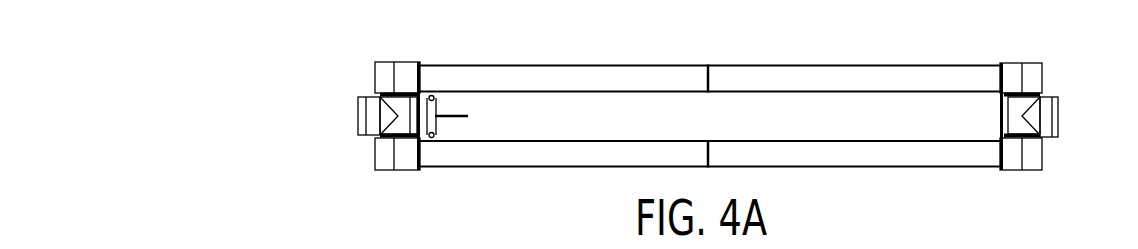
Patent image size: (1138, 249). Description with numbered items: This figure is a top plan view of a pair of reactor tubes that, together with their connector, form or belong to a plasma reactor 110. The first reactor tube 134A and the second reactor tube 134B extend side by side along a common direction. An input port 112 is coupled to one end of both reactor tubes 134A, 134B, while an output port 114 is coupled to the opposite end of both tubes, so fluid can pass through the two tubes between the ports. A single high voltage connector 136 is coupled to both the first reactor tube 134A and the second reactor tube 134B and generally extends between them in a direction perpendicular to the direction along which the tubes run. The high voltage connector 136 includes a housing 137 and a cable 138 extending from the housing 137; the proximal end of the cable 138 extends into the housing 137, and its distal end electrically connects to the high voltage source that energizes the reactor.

The plasma reactor 110 is at (248, 68).
The input port 112 is at (358, 117).
The output port 114 is at (1060, 115).
The first reactor tube 134A is at (940, 157).
The second reactor tube 134B is at (927, 78).
The high voltage connector 136 is at (437, 64).
The housing 137 is at (430, 118).
The cable 138 is at (457, 113).